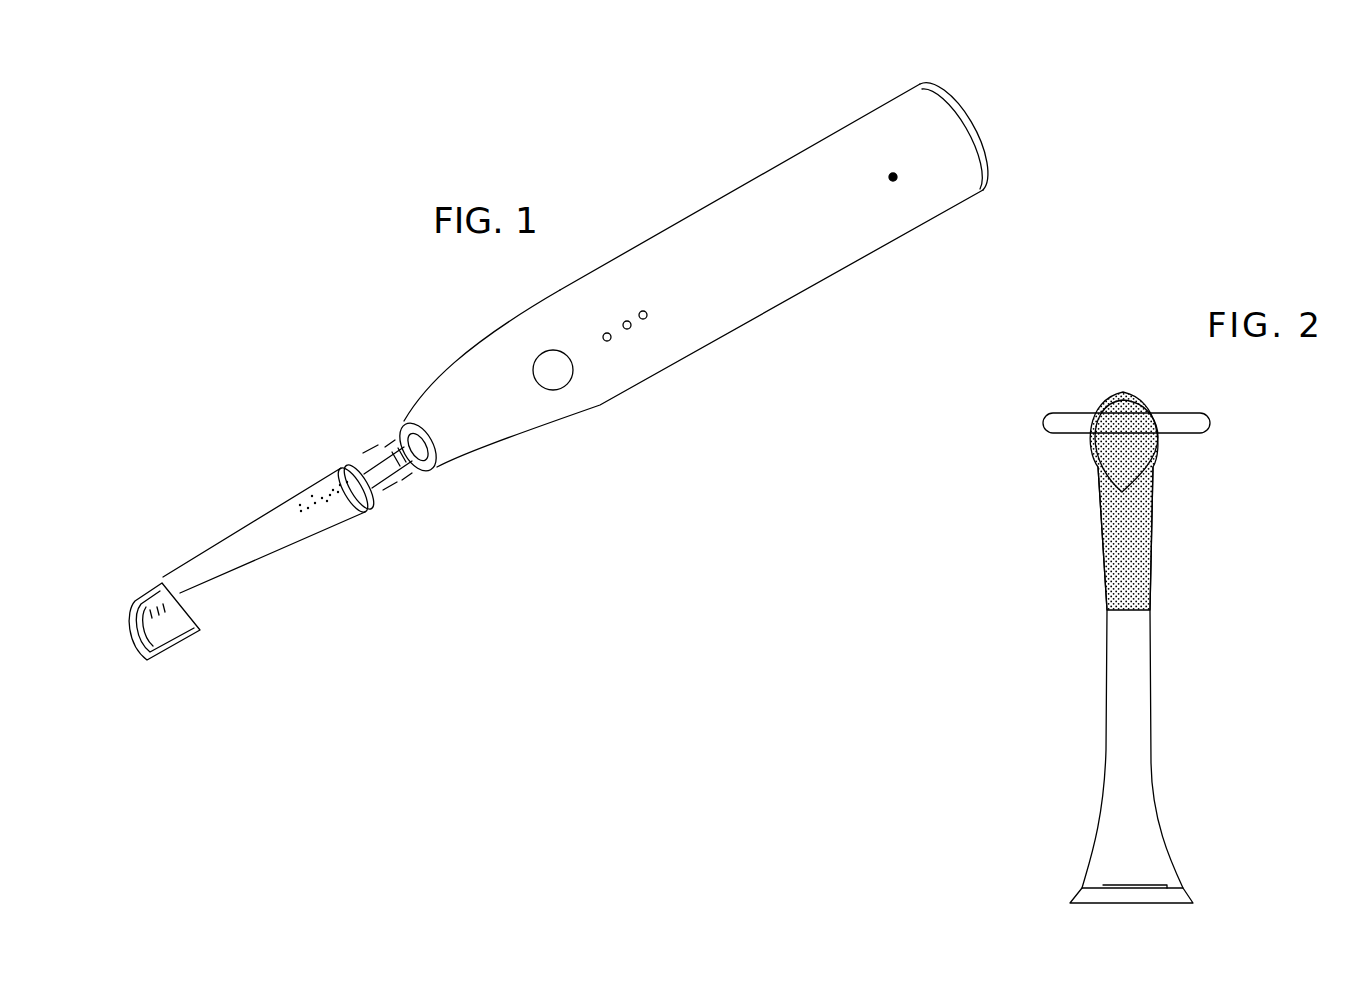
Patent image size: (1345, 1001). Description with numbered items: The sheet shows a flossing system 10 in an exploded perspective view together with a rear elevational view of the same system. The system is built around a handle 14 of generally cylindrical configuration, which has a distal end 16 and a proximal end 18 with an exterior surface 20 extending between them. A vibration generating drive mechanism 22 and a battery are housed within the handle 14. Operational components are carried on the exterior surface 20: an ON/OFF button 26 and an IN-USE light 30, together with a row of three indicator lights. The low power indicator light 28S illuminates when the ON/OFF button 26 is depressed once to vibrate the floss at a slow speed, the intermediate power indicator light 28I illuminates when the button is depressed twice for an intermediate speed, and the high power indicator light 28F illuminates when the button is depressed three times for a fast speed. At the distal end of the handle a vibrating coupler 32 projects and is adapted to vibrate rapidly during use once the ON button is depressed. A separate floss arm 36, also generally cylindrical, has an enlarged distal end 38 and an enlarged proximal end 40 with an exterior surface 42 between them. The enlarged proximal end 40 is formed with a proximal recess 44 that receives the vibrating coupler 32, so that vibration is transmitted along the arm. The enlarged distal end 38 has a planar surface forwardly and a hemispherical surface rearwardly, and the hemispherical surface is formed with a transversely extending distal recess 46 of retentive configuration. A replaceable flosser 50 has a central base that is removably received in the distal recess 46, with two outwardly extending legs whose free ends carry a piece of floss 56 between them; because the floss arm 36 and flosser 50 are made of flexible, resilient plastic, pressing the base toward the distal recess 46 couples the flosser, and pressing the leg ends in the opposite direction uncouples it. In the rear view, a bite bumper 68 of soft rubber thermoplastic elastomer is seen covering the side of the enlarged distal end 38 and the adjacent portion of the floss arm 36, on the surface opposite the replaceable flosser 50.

In FIG. 1, the flossing system 10 is at (562, 127).
In FIG. 1, the handle 14 is at (838, 264).
In FIG. 1, the distal end 16 is at (437, 403).
In FIG. 1, the proximal end 18 is at (988, 138).
In FIG. 1, the exterior surface 20 is at (912, 229).
In FIG. 1, the vibration generating drive mechanism 22 is at (402, 427).
In FIG. 1, the ON/OFF button 26 is at (556, 392).
In FIG. 1, the low power indicator light 28S is at (640, 311).
In FIG. 1, the high power indicator light 28F is at (603, 334).
In FIG. 1, the intermediate power indicator light 28I is at (631, 329).
In FIG. 1, the IN-USE light 30 is at (890, 174).
In FIG. 1, the vibrating coupler 32 is at (408, 468).
In FIG. 1, the floss arm 36 is at (243, 527).
In FIG. 2, the floss arm 36 is at (1106, 662).
In FIG. 1, the enlarged distal end 38 is at (185, 585).
In FIG. 1, the enlarged proximal end 40 is at (364, 512).
In FIG. 1, the exterior surface 42 is at (282, 543).
In FIG. 1, the proximal recess 44 is at (297, 500).
In FIG. 1, the distal recess 46 is at (133, 595).
In FIG. 1, the replaceable flosser 50 is at (150, 655).
In FIG. 2, the replaceable flosser 50 is at (1065, 413).
In FIG. 1, the piece of floss 56 is at (168, 650).
In FIG. 2, the bite bumper 68 is at (1152, 530).